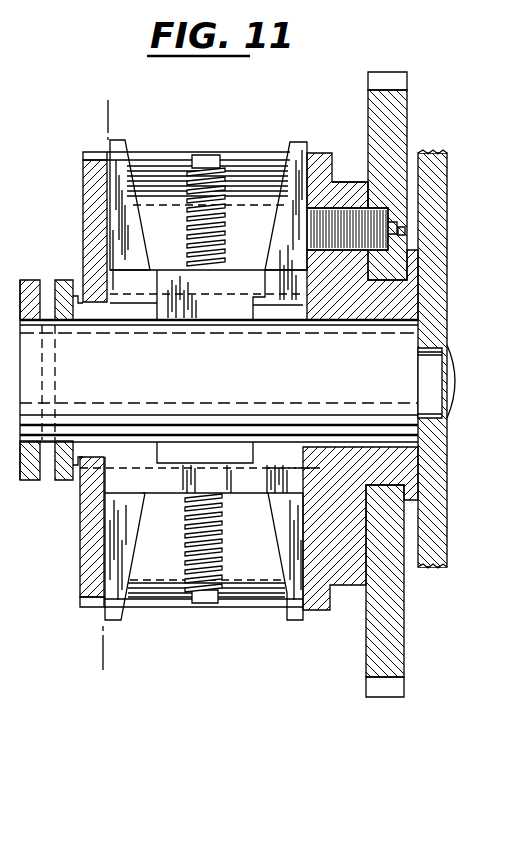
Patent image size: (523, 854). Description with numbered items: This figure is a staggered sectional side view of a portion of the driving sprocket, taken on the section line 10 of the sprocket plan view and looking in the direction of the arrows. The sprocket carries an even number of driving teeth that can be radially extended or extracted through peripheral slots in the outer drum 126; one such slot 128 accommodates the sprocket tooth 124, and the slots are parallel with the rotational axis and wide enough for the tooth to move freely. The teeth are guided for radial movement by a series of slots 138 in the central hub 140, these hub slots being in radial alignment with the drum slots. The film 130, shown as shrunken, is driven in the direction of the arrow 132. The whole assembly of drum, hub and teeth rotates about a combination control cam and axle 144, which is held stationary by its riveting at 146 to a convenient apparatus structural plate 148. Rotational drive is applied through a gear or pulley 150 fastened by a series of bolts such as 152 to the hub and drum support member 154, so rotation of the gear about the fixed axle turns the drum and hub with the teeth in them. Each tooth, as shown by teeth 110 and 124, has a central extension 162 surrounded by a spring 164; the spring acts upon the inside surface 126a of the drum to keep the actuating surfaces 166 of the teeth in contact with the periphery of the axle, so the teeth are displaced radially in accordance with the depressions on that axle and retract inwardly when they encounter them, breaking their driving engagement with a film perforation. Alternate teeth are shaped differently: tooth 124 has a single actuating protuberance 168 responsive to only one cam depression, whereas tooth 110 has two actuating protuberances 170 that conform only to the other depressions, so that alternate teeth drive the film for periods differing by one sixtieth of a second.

The section line 10 is at (106, 112).
The sprocket tooth 110 is at (125, 567).
The sprocket tooth 124 is at (129, 176).
The drum 126 is at (320, 153).
The inside surface of the drum 126a is at (276, 157).
The peripheral slot 128 is at (84, 156).
The film 130 is at (36, 320).
The arrow 132 is at (36, 205).
The slot 138 is at (130, 307).
The central hub 140 is at (283, 469).
The combination control cam and axle 144 is at (415, 342).
The riveting 146 is at (447, 418).
The apparatus structural plate 148 is at (446, 461).
The gear or pulley 150 is at (408, 103).
The bolt 152 is at (350, 240).
The hub and drum support member 154 is at (340, 187).
The central extension 162 is at (200, 155).
The spring 164 is at (276, 152).
The actuating surface 166 is at (213, 327).
The actuating protuberance 168 is at (182, 313).
The actuating protuberances 170 is at (147, 457).